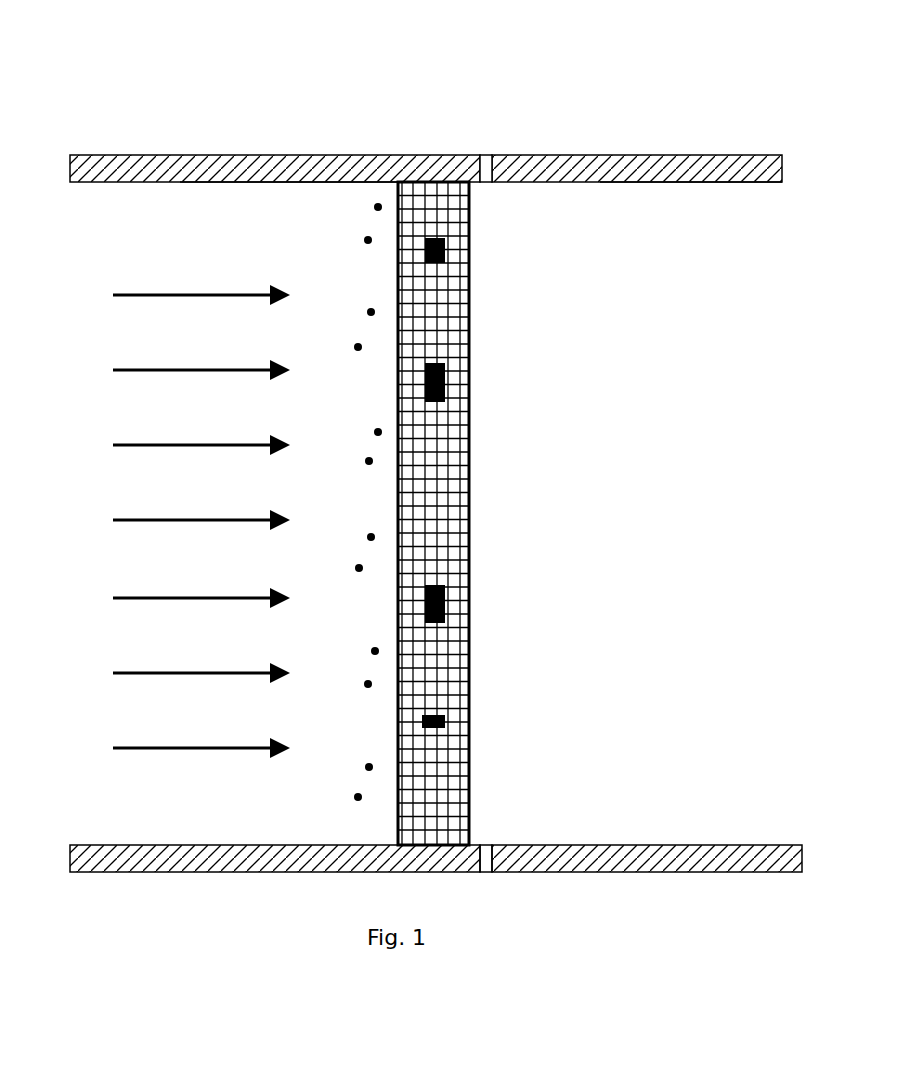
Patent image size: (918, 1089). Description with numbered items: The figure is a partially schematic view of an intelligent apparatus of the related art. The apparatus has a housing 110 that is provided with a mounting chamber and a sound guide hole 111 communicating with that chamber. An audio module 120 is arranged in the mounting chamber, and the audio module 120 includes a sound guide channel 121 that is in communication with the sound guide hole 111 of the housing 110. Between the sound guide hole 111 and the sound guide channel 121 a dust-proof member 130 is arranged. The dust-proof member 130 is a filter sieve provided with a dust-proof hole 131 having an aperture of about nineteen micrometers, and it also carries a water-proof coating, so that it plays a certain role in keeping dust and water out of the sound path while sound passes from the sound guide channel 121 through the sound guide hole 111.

The housing 110 is at (110, 166).
The sound guide hole 111 is at (268, 197).
The audio module 120 is at (637, 155).
The sound guide channel 121 is at (752, 207).
The dust-proof member 130 is at (474, 517).
The dust-proof hole 131 is at (460, 431).